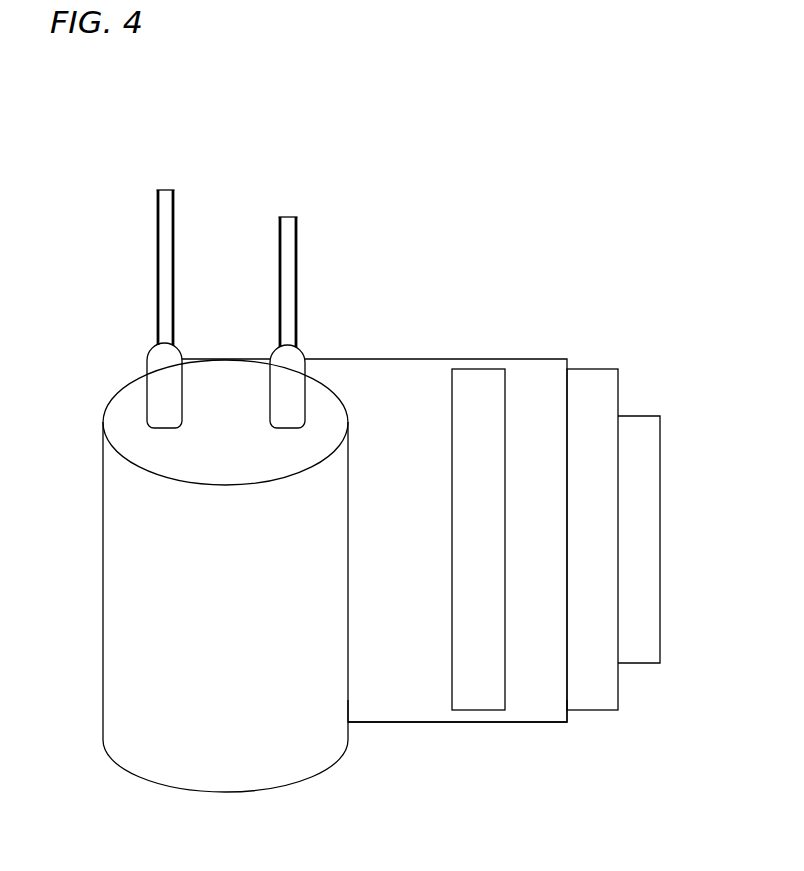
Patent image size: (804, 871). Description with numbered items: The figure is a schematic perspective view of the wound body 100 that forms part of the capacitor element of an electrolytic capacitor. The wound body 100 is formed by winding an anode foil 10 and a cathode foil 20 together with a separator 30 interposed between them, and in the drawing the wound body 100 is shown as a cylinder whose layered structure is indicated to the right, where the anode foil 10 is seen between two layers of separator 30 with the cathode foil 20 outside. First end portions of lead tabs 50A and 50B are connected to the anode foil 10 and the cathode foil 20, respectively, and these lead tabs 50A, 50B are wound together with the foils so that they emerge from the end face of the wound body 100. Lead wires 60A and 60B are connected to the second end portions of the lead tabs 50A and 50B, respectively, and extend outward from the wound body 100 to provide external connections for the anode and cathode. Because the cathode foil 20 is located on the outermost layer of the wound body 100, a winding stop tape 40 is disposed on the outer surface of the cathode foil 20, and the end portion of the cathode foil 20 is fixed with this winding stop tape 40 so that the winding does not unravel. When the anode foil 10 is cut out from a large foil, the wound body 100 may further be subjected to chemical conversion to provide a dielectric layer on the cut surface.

The wound body 100 is at (460, 183).
The anode foil 10 is at (488, 688).
The cathode foil 20 is at (592, 698).
The separator 30 is at (418, 690).
The winding stop tape 40 is at (637, 653).
The lead tab 50A is at (145, 358).
The lead tab 50B is at (308, 358).
The lead wire 60A is at (163, 238).
The lead wire 60B is at (295, 226).